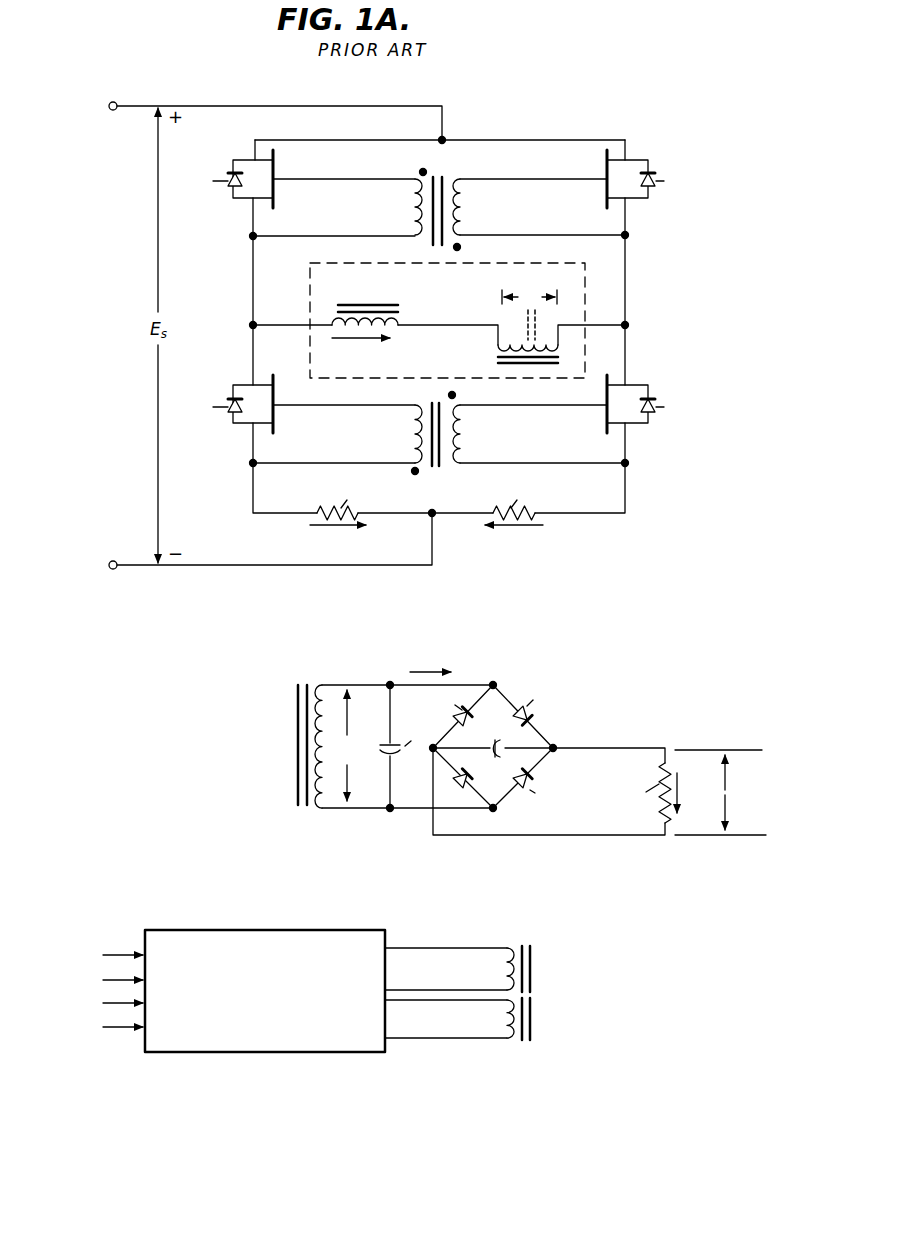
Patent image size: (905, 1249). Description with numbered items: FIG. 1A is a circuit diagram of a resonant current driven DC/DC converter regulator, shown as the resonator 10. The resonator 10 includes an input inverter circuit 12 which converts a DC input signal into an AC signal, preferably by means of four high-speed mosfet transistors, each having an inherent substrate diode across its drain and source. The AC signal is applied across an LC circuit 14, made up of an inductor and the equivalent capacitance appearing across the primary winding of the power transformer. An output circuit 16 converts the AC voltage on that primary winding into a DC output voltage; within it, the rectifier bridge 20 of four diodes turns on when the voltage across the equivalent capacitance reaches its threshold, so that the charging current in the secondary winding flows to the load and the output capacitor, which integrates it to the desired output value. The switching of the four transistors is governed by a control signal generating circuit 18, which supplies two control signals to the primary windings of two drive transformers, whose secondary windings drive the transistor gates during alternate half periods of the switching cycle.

The resonator 10 is at (655, 1012).
The input inverter circuit 12 is at (659, 150).
The LC circuit 14 is at (310, 288).
The output circuit 16 is at (607, 710).
The control signal generating circuit 18 is at (280, 902).
The rectifier bridge 20 is at (515, 690).